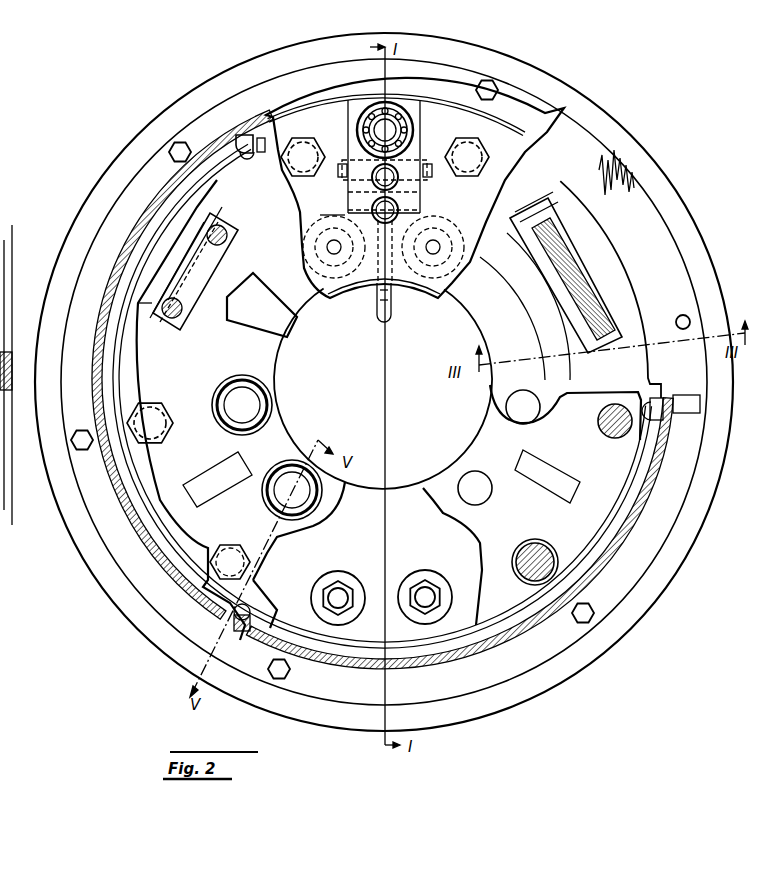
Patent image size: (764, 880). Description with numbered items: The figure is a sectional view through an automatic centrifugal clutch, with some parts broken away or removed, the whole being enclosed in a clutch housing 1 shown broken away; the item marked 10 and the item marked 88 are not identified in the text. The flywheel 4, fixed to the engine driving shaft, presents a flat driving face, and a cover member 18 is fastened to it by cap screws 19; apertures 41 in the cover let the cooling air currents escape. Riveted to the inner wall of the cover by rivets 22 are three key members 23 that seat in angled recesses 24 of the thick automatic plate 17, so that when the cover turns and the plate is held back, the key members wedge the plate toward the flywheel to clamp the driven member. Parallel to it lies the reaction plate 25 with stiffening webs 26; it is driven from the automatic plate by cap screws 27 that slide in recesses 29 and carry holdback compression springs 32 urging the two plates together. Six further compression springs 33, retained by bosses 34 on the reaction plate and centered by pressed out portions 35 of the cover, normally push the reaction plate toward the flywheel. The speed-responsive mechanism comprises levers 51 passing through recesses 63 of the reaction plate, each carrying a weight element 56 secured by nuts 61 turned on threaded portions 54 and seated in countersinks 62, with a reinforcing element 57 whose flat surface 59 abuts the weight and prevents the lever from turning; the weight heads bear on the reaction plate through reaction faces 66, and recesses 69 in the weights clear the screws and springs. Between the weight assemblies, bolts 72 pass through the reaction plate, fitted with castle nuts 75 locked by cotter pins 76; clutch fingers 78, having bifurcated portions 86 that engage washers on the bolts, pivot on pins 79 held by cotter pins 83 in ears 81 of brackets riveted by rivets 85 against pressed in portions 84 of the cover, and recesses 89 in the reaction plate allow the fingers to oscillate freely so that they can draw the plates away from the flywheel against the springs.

The clutch housing 1 is at (7, 362).
The flywheel 4 is at (118, 176).
The drum 10 is at (10, 350).
The automatic plate 17 is at (596, 252).
The cover member 18 is at (516, 144).
The cap screws 19 is at (176, 146).
The rivets 22 is at (249, 160).
The key members 23 is at (240, 135).
The recesses 24 is at (261, 154).
The reaction plate 25 is at (162, 368).
The stiffening webs 26 is at (247, 337).
The cap screws 27 is at (468, 176).
The recesses 29 is at (160, 442).
The compression springs 32 is at (525, 550).
The compression springs 33 is at (434, 280).
The bosses 34 is at (505, 407).
The pressed out portions 35 is at (337, 254).
The apertures 41 is at (132, 247).
The lever 51 is at (200, 248).
The threaded portions 54 is at (227, 237).
The weight element 56 is at (416, 552).
The reinforcing element 57 is at (183, 268).
The flat surface 59 is at (190, 280).
The nuts 61 is at (338, 588).
The countersinks 62 is at (312, 592).
The recesses 63 is at (148, 310).
The reaction faces 66 is at (553, 266).
The recesses 69 is at (438, 512).
The bolts 72 is at (372, 110).
The castle nuts 75 is at (380, 112).
The cotter pins 76 is at (370, 118).
The clutch fingers 78 is at (384, 320).
The pins 79 is at (420, 170).
The ears 81 is at (352, 185).
The cotter pins 83 is at (340, 172).
The pressed in portions 84 is at (360, 148).
The rivets 85 is at (437, 118).
The bifurcated portions 86 is at (402, 118).
The housing wall 88 is at (346, 117).
The recesses 89 is at (545, 480).